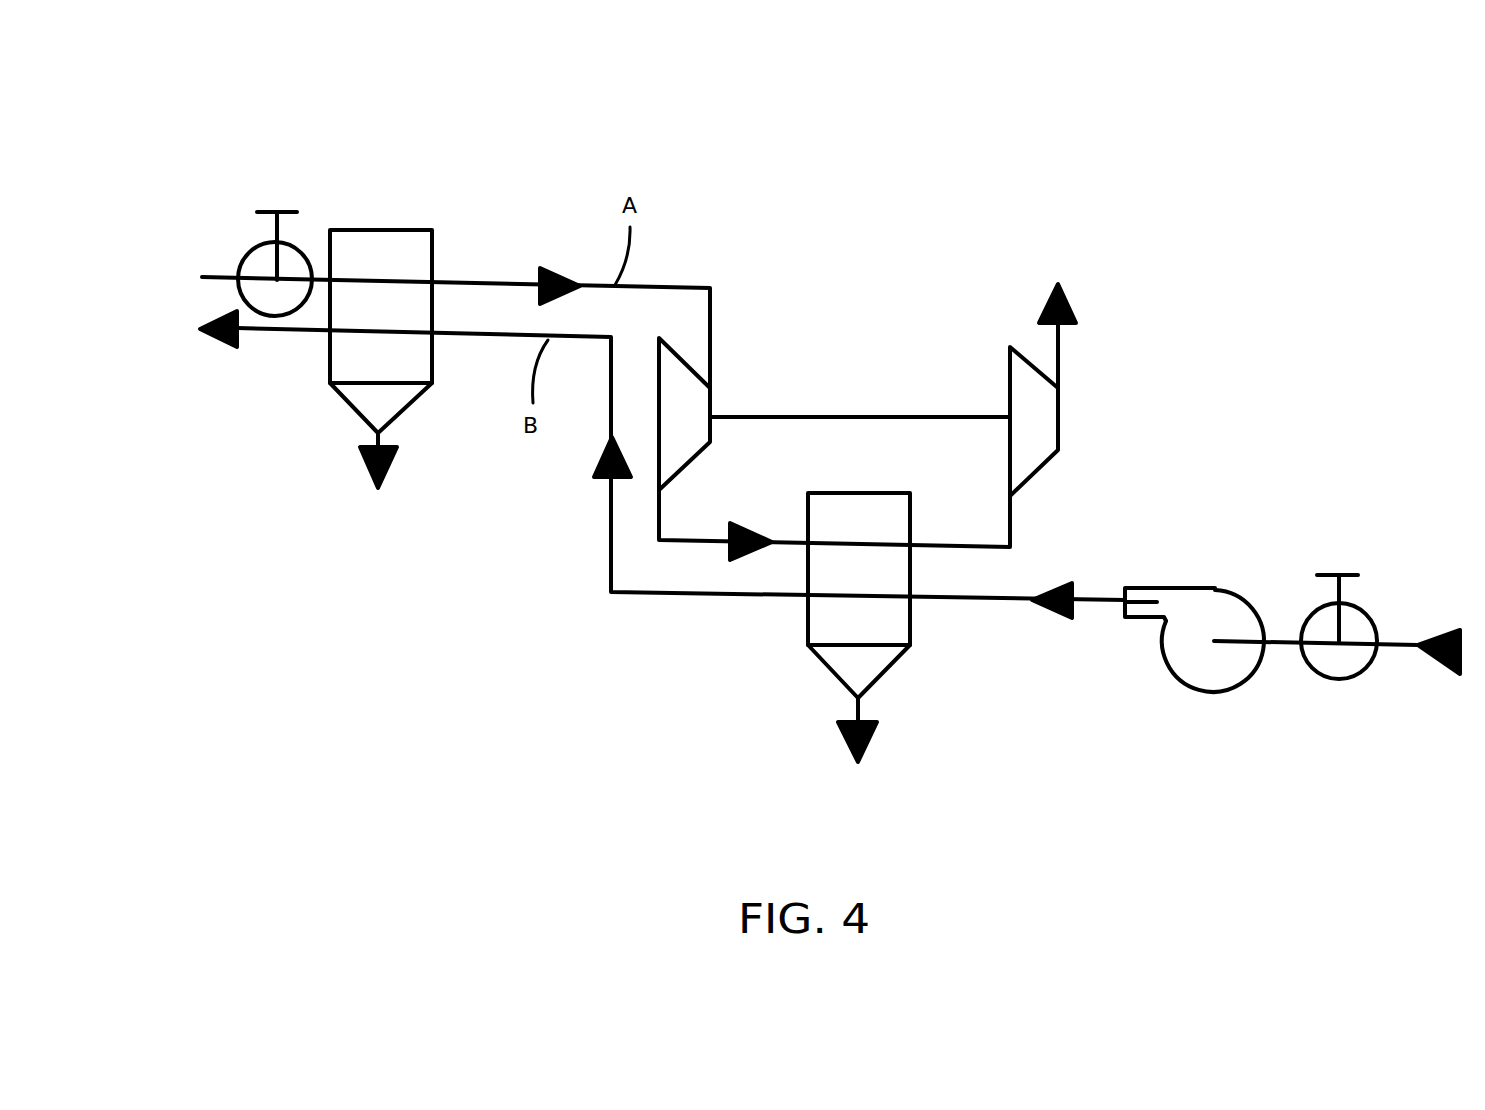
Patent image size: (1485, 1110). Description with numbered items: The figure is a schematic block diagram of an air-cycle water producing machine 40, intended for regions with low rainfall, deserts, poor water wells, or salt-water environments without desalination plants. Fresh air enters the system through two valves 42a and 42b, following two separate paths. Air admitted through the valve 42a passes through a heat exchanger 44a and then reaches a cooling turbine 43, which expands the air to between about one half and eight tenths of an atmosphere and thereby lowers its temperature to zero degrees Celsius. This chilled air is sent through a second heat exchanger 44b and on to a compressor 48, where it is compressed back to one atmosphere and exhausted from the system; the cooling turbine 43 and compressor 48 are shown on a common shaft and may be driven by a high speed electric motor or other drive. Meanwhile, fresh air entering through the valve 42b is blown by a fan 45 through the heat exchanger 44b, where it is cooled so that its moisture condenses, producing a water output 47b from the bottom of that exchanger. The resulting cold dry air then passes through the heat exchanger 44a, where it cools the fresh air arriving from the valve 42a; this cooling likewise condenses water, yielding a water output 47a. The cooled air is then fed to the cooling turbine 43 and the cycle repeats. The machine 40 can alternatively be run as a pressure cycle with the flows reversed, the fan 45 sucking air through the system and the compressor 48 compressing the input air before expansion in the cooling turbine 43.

The air-cycle water producing machine 40 is at (980, 158).
The valve 42a is at (284, 248).
The valve 42b is at (1346, 659).
The cooling turbine 43 is at (687, 403).
The heat exchanger 44a is at (385, 305).
The second heat exchanger 44b is at (828, 623).
The fan 45 is at (1214, 660).
The water output 47a is at (392, 465).
The water output 47b is at (868, 738).
The compressor 48 is at (1036, 407).